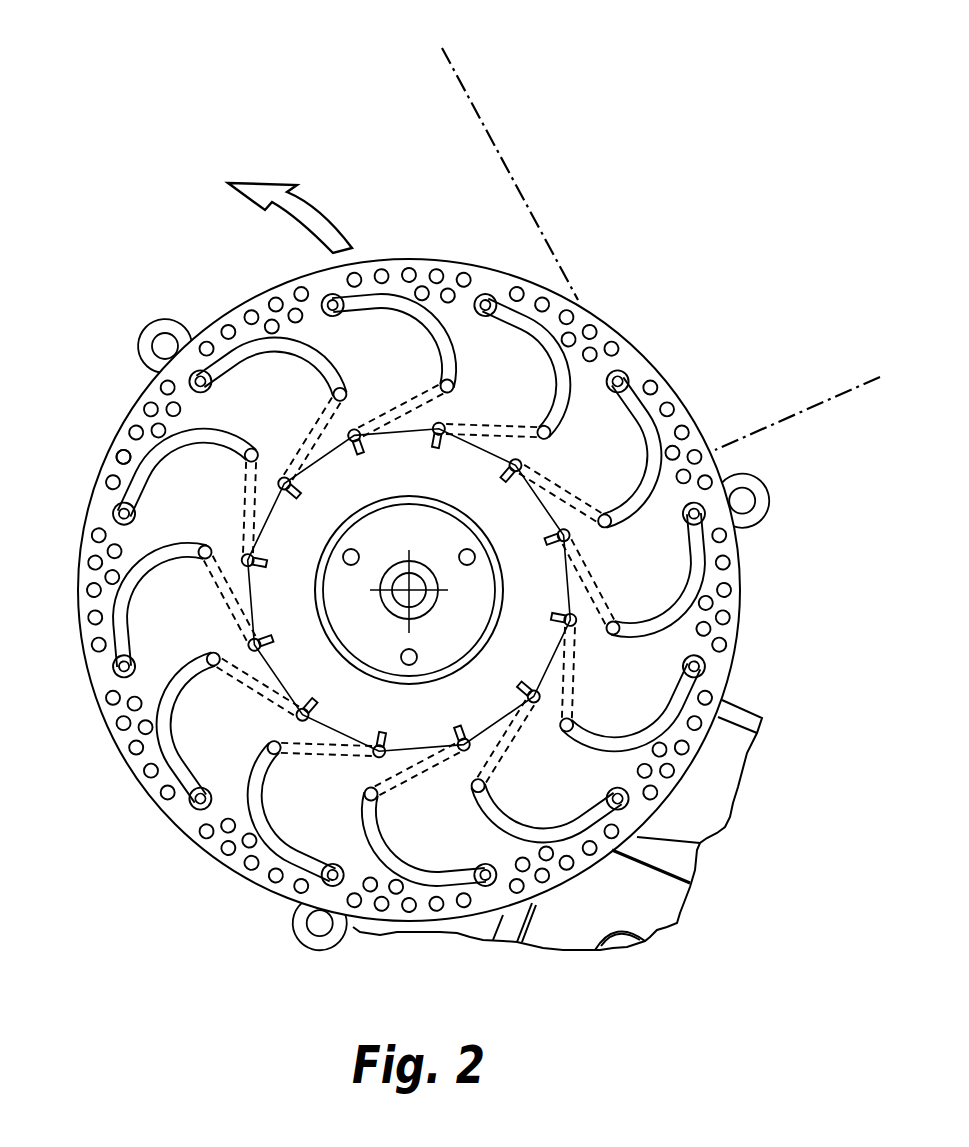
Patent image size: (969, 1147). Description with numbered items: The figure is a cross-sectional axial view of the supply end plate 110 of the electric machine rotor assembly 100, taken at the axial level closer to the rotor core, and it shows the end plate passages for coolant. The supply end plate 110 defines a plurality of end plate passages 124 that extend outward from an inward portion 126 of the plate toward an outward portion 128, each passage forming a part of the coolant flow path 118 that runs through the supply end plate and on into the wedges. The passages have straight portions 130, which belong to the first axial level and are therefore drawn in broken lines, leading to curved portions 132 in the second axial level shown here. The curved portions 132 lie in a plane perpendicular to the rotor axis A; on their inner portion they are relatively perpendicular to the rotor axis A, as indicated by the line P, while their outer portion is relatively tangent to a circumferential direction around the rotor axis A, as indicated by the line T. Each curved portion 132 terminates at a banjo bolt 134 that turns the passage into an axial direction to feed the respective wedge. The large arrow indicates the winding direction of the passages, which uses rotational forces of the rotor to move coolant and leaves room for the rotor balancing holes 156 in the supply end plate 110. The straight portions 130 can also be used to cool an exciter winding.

The electric machine rotor assembly 100 is at (100, 250).
The supply end plate 110 is at (216, 312).
The outward portion 128 is at (726, 662).
The rotor balancing holes 156 is at (120, 458).
The banjo bolt 134 is at (619, 378).
The end plate passages 124 is at (638, 415).
The curved portions 132 is at (616, 456).
The straight portions 130 is at (407, 405).
The flow path 118 is at (492, 414).
The inward portion 126 is at (547, 660).
The rotor axis A is at (408, 590).
The line T is at (494, 161).
The line P is at (803, 413).